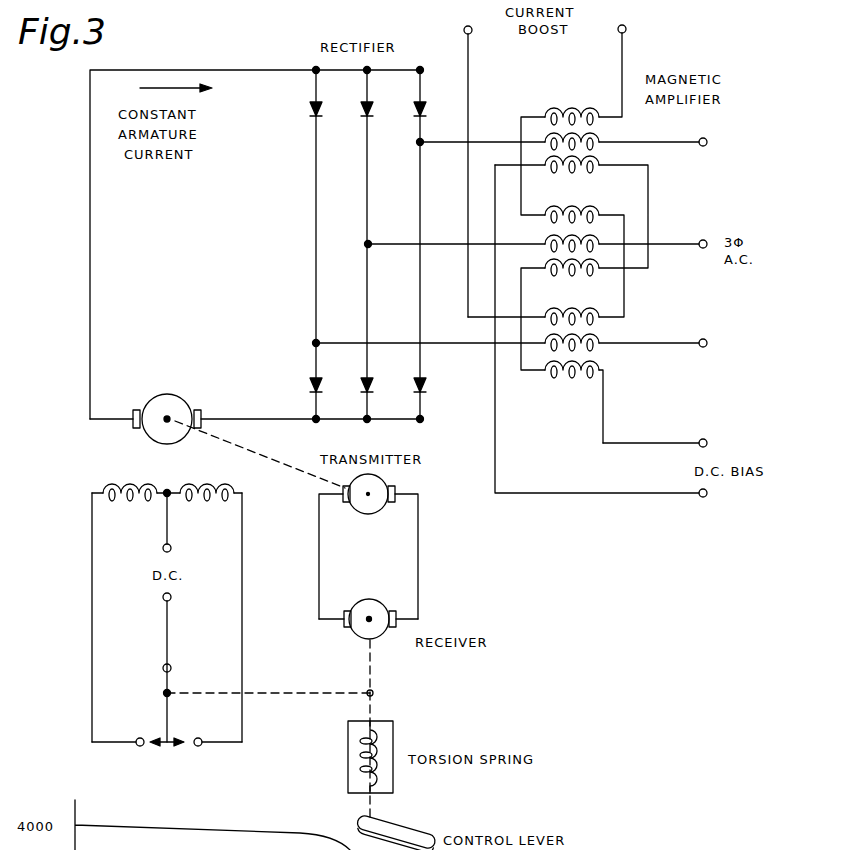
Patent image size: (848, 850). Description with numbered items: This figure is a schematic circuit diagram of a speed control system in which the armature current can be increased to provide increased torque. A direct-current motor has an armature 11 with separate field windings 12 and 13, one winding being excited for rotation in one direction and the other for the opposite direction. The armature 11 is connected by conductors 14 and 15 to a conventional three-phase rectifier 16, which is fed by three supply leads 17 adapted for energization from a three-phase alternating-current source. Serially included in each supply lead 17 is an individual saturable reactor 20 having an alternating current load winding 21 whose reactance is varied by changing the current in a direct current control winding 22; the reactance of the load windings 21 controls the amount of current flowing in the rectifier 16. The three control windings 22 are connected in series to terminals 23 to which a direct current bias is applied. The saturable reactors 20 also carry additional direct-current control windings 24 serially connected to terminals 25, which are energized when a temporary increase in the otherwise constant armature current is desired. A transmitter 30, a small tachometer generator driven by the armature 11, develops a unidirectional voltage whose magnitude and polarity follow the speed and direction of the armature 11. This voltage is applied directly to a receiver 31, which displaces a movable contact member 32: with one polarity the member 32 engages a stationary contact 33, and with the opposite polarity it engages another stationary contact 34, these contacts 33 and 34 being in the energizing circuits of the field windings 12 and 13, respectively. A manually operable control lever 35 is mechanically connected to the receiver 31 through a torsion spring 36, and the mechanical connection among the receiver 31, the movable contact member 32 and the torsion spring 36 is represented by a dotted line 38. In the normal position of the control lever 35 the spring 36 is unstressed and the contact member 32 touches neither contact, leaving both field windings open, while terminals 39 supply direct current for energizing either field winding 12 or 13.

The armature 11 is at (206, 378).
The field winding 12 is at (118, 490).
The field winding 13 is at (215, 490).
The conductor 14 is at (195, 70).
The conductor 15 is at (282, 388).
The three-phase rectifier 16 is at (358, 248).
The supply leads 17 is at (706, 146).
The saturable reactor 20 is at (556, 98).
The alternating current load winding 21 is at (600, 134).
The direct current control winding 22 is at (600, 157).
The terminals 23 is at (707, 441).
The additional direct-current control winding 24 is at (612, 90).
The terminals 25 is at (471, 34).
The transmitter 30 is at (365, 516).
The receiver 31 is at (366, 600).
The movable contact member 32 is at (168, 728).
The stationary contact 33 is at (138, 746).
The stationary contact 34 is at (200, 746).
The control lever 35 is at (400, 826).
The torsion spring 36 is at (393, 740).
The dotted line 38 is at (262, 690).
The terminals 39 is at (171, 547).